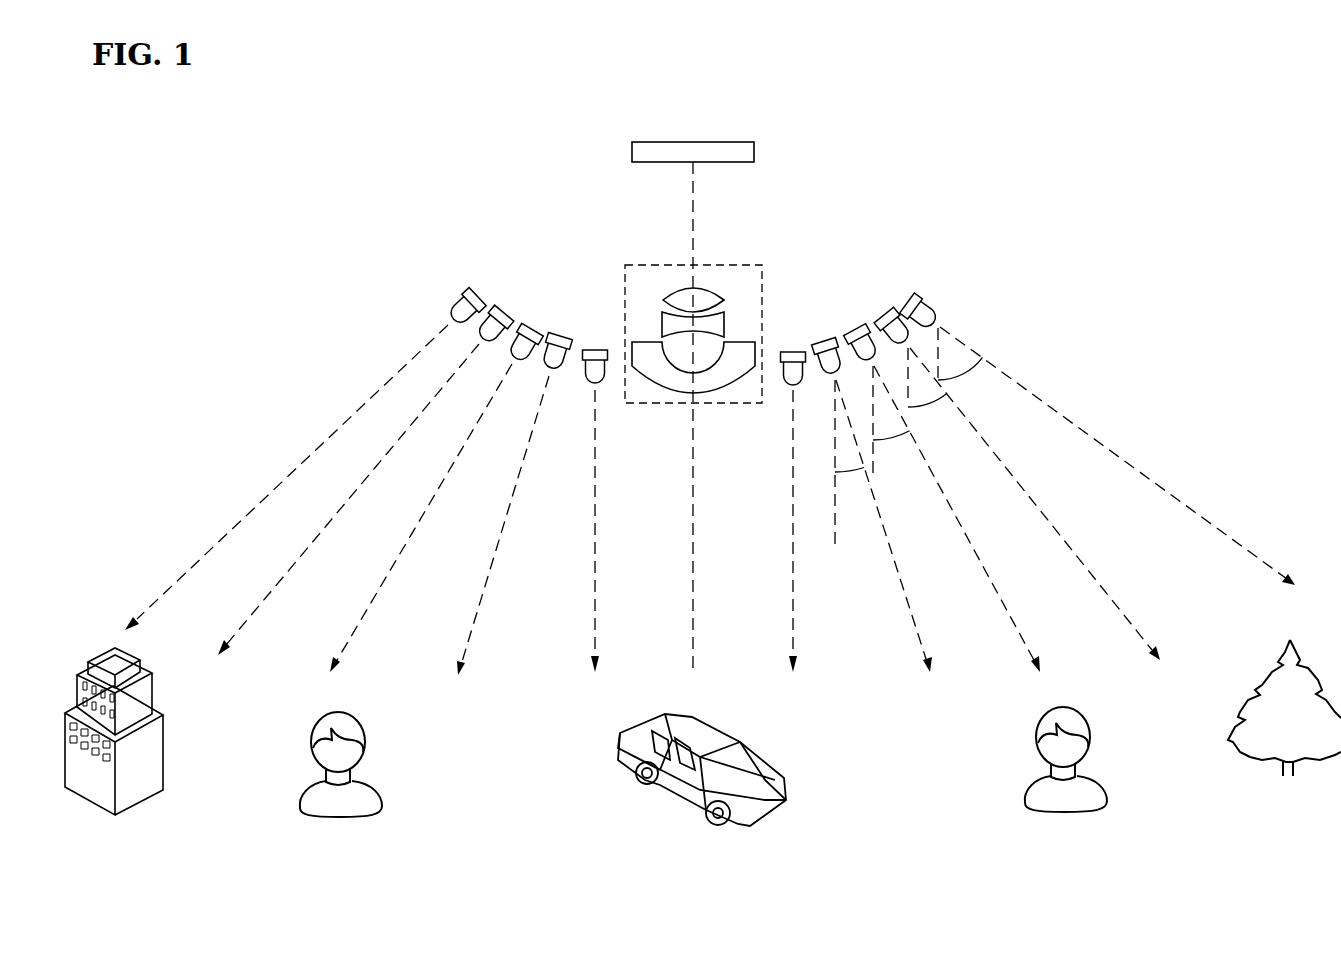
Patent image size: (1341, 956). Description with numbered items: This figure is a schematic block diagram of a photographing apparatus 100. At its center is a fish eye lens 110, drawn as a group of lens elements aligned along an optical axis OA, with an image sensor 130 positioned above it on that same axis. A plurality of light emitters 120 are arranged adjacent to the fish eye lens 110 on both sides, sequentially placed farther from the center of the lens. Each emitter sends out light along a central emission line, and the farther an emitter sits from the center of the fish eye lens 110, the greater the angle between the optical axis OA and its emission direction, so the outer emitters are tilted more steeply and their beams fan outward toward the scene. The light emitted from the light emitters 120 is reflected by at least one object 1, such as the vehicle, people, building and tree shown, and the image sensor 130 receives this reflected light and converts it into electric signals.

The object 1 is at (748, 740).
The photographing apparatus 100 is at (835, 84).
The fish eye lens 110 is at (716, 264).
The light emitters 120 is at (456, 302).
The image sensor 130 is at (690, 152).
The optical axis OA is at (693, 338).